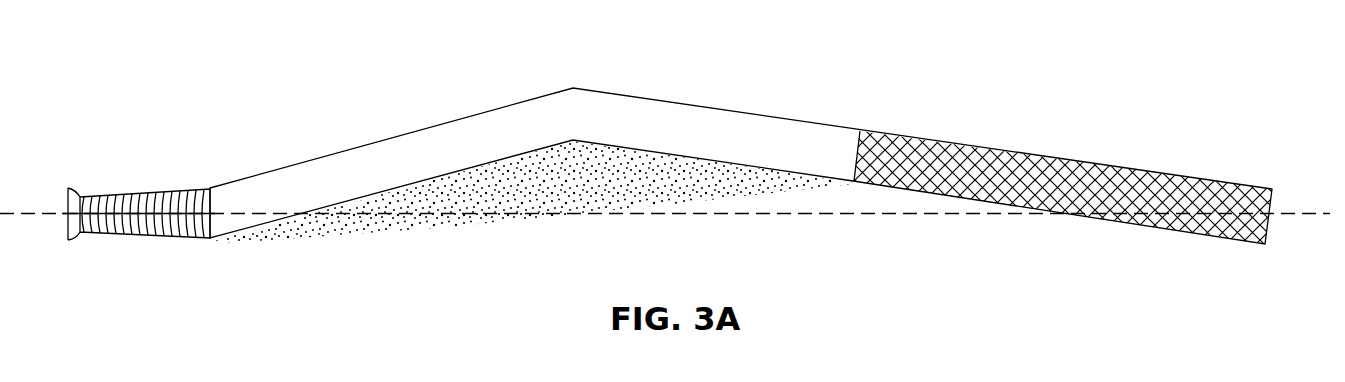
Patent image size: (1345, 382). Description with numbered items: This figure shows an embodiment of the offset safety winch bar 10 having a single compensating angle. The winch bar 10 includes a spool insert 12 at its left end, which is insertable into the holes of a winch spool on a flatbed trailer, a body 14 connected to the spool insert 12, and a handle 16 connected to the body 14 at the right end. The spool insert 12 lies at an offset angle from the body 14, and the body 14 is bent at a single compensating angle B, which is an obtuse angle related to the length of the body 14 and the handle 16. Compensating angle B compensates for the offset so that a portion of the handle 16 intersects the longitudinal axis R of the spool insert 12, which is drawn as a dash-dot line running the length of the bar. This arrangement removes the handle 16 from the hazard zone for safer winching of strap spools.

The offset safety winch bar 10 is at (494, 68).
The spool insert 12 is at (180, 191).
The body 14 is at (717, 115).
The handle 16 is at (1046, 163).
The compensating angle B is at (545, 152).
The longitudinal axis R is at (1287, 212).